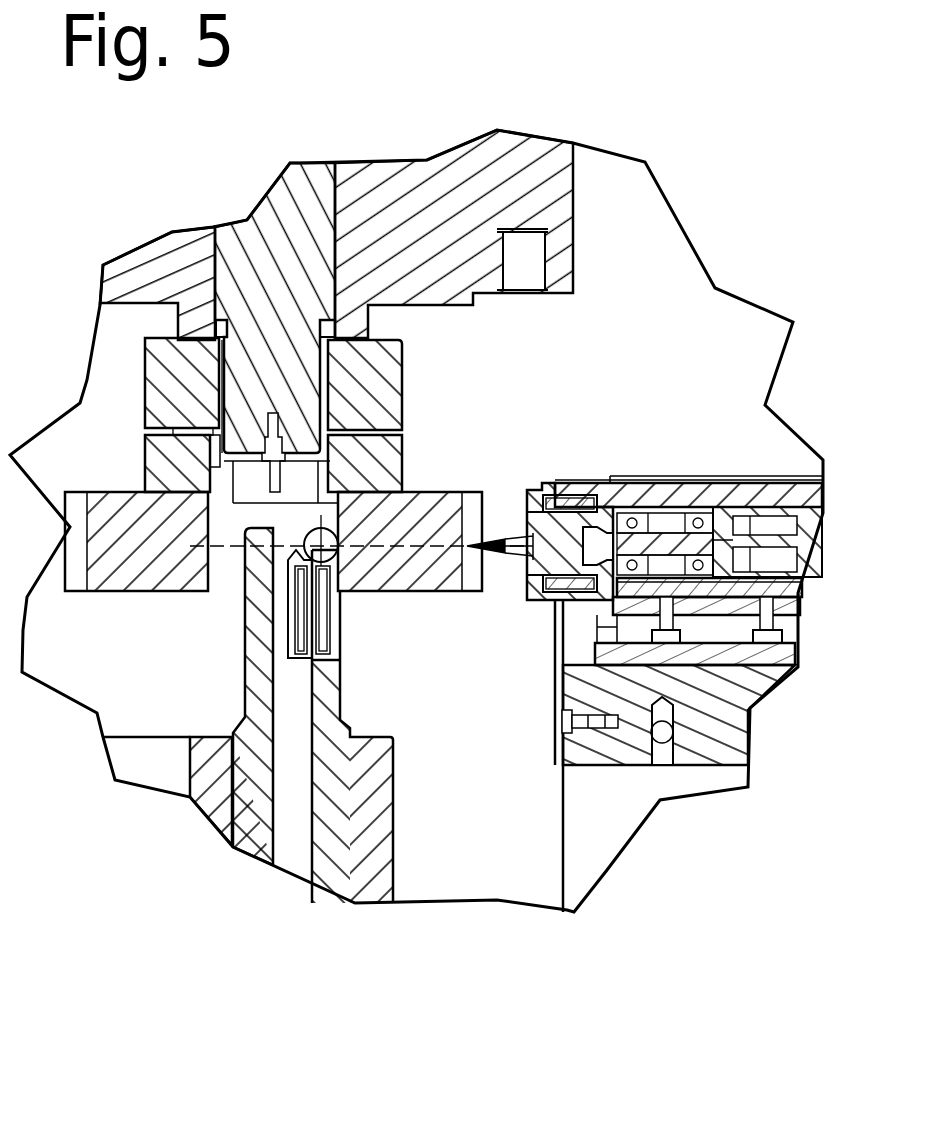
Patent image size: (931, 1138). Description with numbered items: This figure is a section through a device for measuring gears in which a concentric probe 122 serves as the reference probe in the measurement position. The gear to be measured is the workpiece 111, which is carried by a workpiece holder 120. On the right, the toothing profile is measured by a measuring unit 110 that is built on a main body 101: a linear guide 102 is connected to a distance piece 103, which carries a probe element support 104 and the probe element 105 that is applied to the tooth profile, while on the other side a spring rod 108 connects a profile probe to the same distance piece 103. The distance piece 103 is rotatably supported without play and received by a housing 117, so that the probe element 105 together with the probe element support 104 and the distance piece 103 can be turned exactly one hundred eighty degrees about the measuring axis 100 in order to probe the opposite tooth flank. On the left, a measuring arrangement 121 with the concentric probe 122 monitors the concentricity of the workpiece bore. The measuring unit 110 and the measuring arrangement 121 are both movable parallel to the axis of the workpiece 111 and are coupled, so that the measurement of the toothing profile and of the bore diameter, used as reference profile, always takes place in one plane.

The measuring axis 100 is at (443, 553).
The main body 101 is at (583, 745).
The linear guide 102 is at (694, 662).
The distance piece 103 is at (600, 523).
The probe element support 104 is at (560, 533).
The probe element 105 is at (515, 565).
The spring rod 108 is at (785, 586).
The measuring unit 110 is at (692, 497).
The workpiece 111 is at (402, 570).
The housing 117 is at (737, 601).
The workpiece holder 120 is at (368, 466).
The measuring arrangement 121 is at (262, 790).
The concentric probe 122 is at (232, 755).